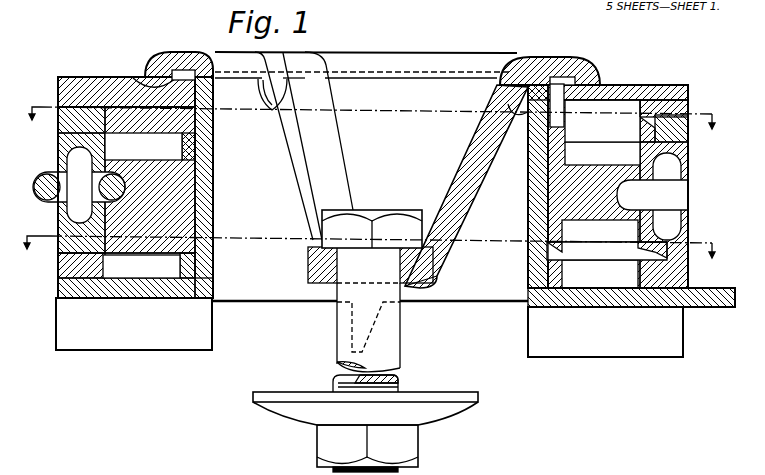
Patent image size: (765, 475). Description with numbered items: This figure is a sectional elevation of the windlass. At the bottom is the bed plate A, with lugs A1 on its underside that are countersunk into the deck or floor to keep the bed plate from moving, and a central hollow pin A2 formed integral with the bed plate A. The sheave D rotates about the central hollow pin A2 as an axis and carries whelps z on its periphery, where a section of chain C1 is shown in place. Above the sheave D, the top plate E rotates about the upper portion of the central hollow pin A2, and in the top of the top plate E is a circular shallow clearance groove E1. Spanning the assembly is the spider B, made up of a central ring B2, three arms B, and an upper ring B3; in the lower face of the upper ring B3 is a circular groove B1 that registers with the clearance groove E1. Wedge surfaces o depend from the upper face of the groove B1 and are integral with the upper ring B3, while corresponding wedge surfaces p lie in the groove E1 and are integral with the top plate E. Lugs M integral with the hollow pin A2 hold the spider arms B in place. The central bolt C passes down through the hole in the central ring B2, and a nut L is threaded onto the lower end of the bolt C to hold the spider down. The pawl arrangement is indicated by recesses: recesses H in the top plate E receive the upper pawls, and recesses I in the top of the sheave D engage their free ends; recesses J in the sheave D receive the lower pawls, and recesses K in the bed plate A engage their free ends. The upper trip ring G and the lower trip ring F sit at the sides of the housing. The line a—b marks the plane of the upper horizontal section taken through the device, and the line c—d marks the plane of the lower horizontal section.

The top plate E is at (92, 80).
The circular shallow clearance groove E1 is at (143, 78).
The circular groove B1 is at (183, 73).
The upper ring B3 is at (422, 62).
The spider B is at (462, 160).
The central ring B2 is at (435, 283).
The wedge surfaces o is at (578, 58).
The wedge surfaces p is at (597, 78).
The section line a-b a is at (363, 104).
The section line a- b is at (719, 115).
The section line c-d c is at (362, 234).
The section line c- d is at (718, 242).
The upper trip ring G is at (62, 122).
The sheave D is at (205, 188).
The lower trip ring F is at (60, 270).
The recesses I is at (372, 149).
The recesses H is at (602, 121).
The recesses J is at (607, 240).
The recesses K is at (370, 271).
The section of chain C1 is at (40, 180).
The whelps z is at (677, 218).
The lugs M is at (267, 100).
The bed plate A is at (262, 292).
The lugs A1 is at (98, 338).
The central hollow pin A2 is at (381, 165).
The central bolt C is at (393, 358).
The nut L is at (453, 408).